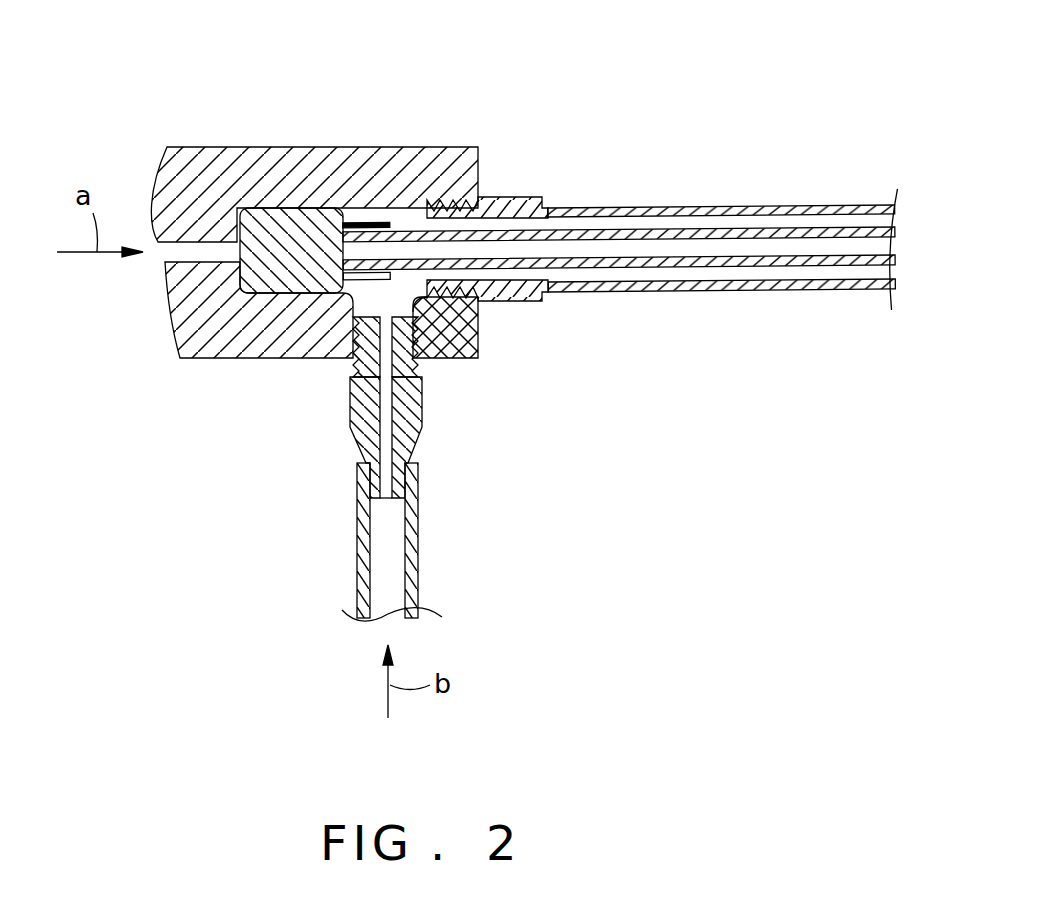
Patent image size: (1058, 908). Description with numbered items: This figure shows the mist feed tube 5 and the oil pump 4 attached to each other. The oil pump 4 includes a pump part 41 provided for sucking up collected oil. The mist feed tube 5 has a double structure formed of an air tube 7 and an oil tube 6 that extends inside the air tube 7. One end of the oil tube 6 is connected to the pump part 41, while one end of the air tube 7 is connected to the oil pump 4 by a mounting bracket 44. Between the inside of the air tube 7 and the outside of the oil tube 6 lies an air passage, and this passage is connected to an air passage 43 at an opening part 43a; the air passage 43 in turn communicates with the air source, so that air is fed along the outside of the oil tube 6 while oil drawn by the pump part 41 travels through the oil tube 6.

The oil pump 4 is at (232, 152).
The pump part 41 is at (273, 283).
The air passage 43 is at (392, 296).
The opening part 43a is at (432, 273).
The mounting bracket 44 is at (505, 200).
The mist feed tube 5 is at (620, 174).
The oil tube 6 is at (718, 257).
The air tube 7 is at (665, 207).